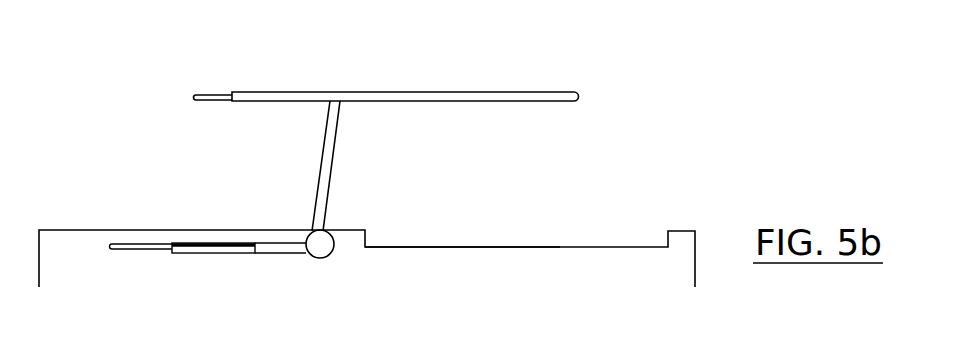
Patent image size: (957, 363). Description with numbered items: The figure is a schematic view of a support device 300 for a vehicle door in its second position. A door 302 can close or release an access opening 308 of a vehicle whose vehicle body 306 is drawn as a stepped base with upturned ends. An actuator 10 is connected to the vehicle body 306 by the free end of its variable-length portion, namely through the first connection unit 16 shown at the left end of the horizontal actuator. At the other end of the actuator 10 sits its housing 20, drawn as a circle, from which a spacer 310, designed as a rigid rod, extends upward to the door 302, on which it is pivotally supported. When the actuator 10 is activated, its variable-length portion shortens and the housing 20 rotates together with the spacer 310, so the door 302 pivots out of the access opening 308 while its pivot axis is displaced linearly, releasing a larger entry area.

The support device 300 is at (626, 93).
The door 302 is at (412, 97).
The vehicle body 306 is at (455, 258).
The access opening 308 is at (622, 240).
The spacer 310 is at (323, 177).
The housing 20 is at (320, 245).
The actuator 10 is at (255, 245).
The first connection unit 16 is at (123, 248).